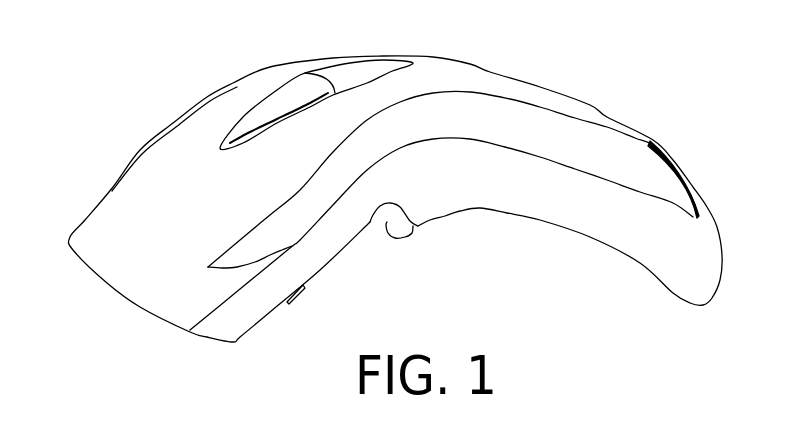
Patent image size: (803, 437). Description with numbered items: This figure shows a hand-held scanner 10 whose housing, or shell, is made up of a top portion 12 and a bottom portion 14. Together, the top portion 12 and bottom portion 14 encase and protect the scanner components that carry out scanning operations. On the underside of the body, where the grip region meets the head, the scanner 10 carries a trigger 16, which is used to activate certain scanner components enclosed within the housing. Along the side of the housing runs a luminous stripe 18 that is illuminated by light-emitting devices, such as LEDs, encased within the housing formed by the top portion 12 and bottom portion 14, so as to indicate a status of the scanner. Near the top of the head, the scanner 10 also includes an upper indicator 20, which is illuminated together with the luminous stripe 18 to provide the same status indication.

The hand-held scanner 10 is at (63, 74).
The top portion 12 is at (180, 147).
The bottom portion 14 is at (498, 200).
The trigger 16 is at (387, 222).
The luminous stripe 18 is at (593, 143).
The upper indicator 20 is at (290, 93).